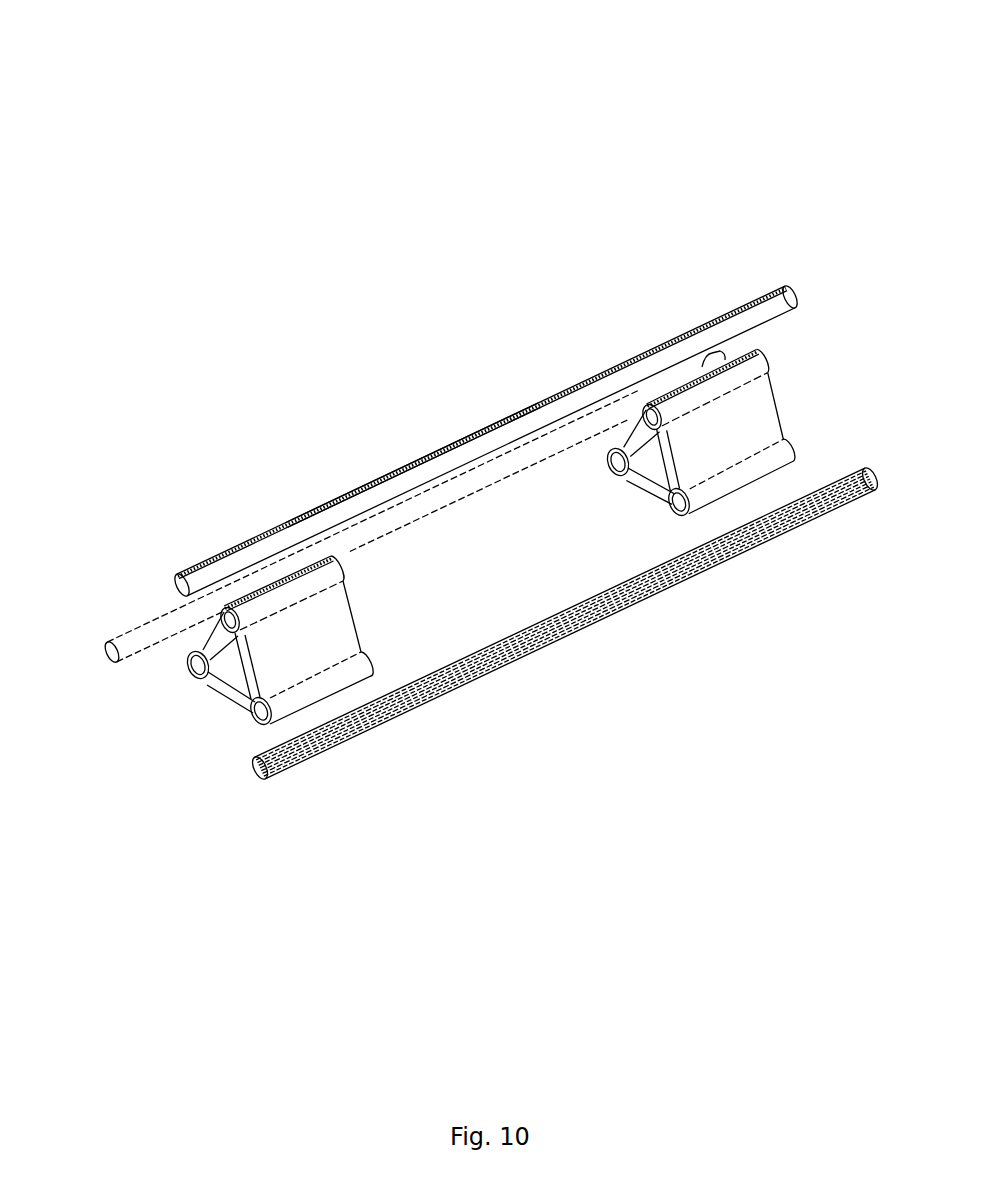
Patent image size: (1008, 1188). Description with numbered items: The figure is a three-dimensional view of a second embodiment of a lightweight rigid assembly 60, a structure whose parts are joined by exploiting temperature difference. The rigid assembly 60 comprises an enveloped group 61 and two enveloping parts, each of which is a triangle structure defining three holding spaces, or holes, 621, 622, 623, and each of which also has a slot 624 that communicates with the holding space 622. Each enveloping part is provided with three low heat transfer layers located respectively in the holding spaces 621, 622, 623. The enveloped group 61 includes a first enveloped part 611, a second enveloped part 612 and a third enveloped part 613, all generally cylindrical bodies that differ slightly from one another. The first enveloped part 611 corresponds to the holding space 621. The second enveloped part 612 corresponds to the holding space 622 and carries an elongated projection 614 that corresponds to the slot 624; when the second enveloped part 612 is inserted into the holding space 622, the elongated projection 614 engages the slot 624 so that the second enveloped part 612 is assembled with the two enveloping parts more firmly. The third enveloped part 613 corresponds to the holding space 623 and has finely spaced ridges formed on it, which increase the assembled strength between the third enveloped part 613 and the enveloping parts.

The rigid assembly 60 is at (441, 214).
The enveloped group 61 is at (260, 463).
The first enveloped part 611 is at (130, 638).
The second enveloped part 612 is at (180, 578).
The third enveloped part 613 is at (256, 768).
The elongated projection 614 is at (355, 492).
The holding space 621 is at (602, 456).
The holding space 622 is at (640, 408).
The holding space 623 is at (679, 522).
The slot 624 is at (708, 362).